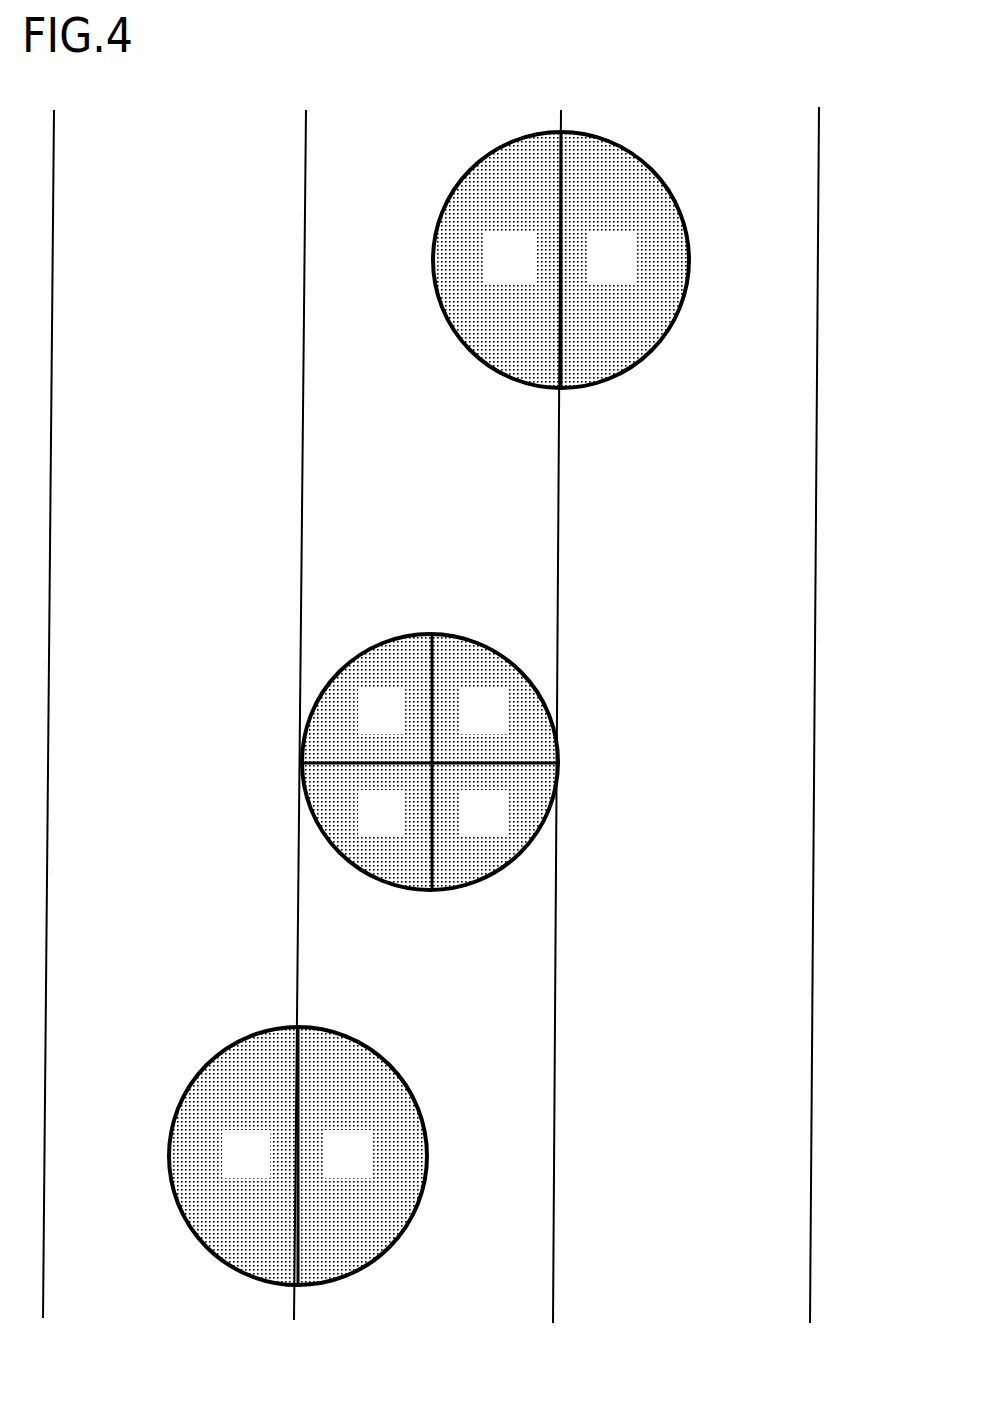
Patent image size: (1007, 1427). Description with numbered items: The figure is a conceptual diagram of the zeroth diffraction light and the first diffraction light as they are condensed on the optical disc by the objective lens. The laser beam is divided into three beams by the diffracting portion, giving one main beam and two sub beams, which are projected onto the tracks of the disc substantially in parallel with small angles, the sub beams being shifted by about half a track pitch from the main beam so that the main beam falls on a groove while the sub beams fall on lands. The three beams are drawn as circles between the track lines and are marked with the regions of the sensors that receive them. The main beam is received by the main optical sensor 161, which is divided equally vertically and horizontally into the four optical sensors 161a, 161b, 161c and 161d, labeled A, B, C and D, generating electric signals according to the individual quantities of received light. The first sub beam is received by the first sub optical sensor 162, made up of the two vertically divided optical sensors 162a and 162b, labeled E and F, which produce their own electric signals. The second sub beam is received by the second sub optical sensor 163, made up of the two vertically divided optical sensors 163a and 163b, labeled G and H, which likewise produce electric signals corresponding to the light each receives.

The sub optical sensor 163 is at (616, 297).
The optical sensor 163a is at (515, 370).
The optical sensor 163b is at (597, 370).
The main optical sensor 161 is at (502, 737).
The optical sensor 161a is at (523, 800).
The optical sensor 161b is at (403, 868).
The optical sensor 161c is at (362, 652).
The optical sensor 161d is at (480, 662).
The sub optical sensor 162 is at (347, 1185).
The optical sensor 162a is at (257, 1265).
The optical sensor 162b is at (328, 1270).